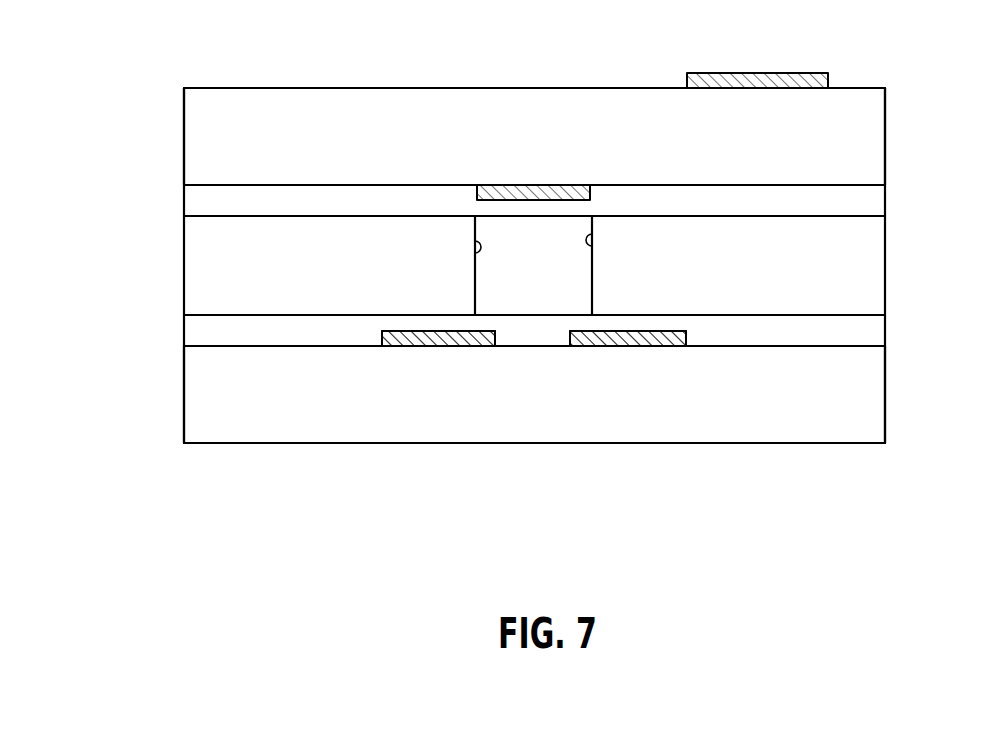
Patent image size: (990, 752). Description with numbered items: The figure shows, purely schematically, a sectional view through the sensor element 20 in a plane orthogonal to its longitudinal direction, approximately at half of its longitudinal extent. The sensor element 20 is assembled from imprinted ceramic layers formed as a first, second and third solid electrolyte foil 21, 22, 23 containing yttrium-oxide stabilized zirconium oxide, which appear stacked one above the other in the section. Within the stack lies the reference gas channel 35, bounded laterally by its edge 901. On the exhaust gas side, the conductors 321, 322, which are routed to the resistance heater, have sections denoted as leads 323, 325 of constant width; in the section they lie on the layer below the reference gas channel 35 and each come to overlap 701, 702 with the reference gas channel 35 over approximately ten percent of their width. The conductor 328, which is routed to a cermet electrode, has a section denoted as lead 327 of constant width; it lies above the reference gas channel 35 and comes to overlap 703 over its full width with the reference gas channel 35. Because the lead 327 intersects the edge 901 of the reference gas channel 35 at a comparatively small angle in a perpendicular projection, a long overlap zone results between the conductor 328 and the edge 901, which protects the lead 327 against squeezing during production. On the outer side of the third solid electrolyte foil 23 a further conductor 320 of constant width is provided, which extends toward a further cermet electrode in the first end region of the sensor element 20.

The sensor element 20 is at (165, 252).
The first solid electrolyte foil 21 is at (850, 398).
The second solid electrolyte foil 22 is at (850, 268).
The third solid electrolyte foil 23 is at (872, 130).
The reference gas channel 35 is at (580, 279).
The conductor 320 is at (835, 82).
The conductor 321 is at (437, 429).
The lead 323 is at (404, 333).
The conductor 322 is at (646, 430).
The lead 325 is at (650, 348).
The lead 327 is at (552, 117).
The conductor 328 is at (552, 117).
The overlap 701 is at (480, 347).
The overlap 702 is at (588, 348).
The overlap 703 is at (509, 184).
The edge of reference gas channel 901 is at (482, 251).